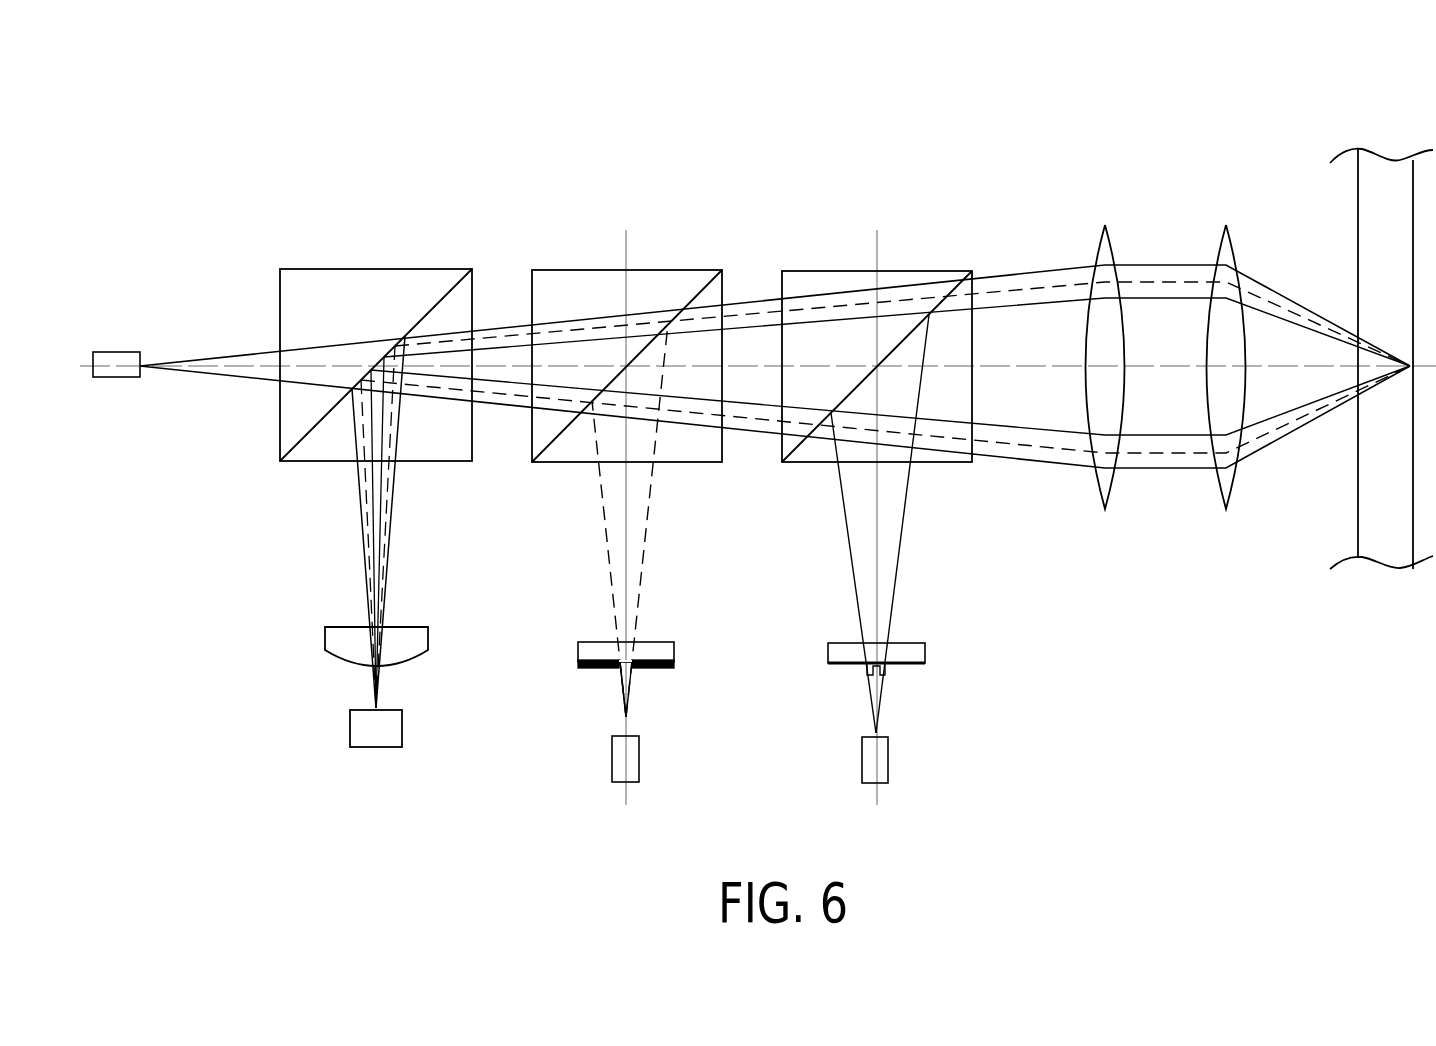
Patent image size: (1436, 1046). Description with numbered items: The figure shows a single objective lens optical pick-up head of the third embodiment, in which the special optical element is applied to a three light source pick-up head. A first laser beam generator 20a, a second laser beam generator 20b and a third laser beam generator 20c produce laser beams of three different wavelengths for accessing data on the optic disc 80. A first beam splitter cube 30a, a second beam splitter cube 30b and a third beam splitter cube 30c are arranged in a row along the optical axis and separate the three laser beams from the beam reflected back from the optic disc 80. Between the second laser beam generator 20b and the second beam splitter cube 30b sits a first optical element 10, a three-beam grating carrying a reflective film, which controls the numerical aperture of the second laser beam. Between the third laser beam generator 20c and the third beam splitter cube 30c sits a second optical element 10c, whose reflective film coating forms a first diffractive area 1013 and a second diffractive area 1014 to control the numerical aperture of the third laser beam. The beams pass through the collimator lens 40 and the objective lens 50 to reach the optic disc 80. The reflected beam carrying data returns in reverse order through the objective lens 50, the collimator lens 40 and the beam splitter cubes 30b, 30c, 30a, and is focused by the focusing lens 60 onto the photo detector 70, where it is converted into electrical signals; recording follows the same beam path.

The first optical element 10 is at (925, 652).
The second optical element 10c is at (675, 650).
The first diffractive area 1013 is at (630, 678).
The second diffractive area 1014 is at (590, 670).
The first laser beam generator 20a is at (112, 356).
The second laser beam generator 20b is at (883, 767).
The third laser beam generator 20c is at (633, 766).
The first beam splitter cube 30a is at (303, 268).
The second beam splitter cube 30b is at (810, 268).
The third beam splitter cube 30c is at (562, 268).
The collimator lens 40 is at (1108, 250).
The objective lens 50 is at (1228, 250).
The focusing lens 60 is at (343, 640).
The photo detector 70 is at (368, 731).
The optic disc 80 is at (1377, 173).